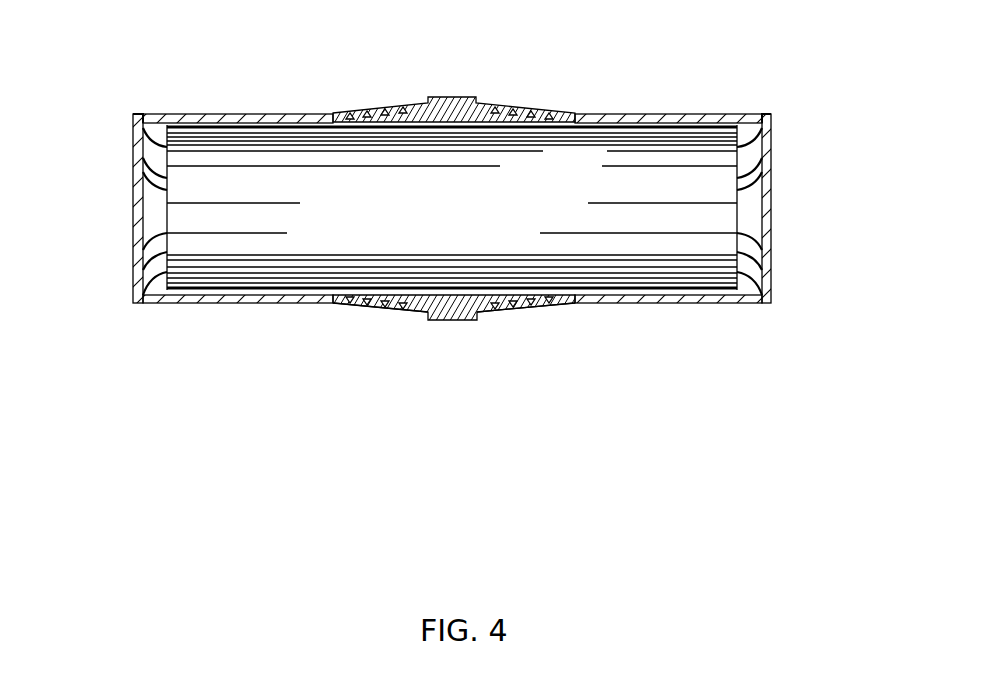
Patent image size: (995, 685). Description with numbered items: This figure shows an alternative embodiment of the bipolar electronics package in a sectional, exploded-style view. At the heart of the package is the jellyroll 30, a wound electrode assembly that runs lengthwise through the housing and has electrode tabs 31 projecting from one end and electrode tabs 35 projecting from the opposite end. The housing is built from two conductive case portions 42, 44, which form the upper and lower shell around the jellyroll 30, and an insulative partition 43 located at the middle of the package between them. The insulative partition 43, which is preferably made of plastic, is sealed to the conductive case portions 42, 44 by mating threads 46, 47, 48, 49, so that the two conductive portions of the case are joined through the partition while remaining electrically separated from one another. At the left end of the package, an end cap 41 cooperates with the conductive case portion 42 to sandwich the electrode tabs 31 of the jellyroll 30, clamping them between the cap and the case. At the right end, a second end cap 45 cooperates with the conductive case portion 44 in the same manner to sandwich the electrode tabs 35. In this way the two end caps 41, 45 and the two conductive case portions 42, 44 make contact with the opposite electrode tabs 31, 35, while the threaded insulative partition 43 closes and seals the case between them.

The jellyroll 30 is at (268, 165).
The electrode tabs 31 is at (143, 114).
The electrode tabs 35 is at (762, 113).
The end cap 41 is at (135, 268).
The conductive case portion 42 is at (212, 305).
The insulative partition 43 is at (455, 320).
The conductive case portion 44 is at (707, 305).
The end cap 45 is at (772, 257).
The mating thread 46 is at (398, 309).
The mating thread 47 is at (370, 308).
The mating thread 48 is at (543, 307).
The mating thread 49 is at (498, 312).